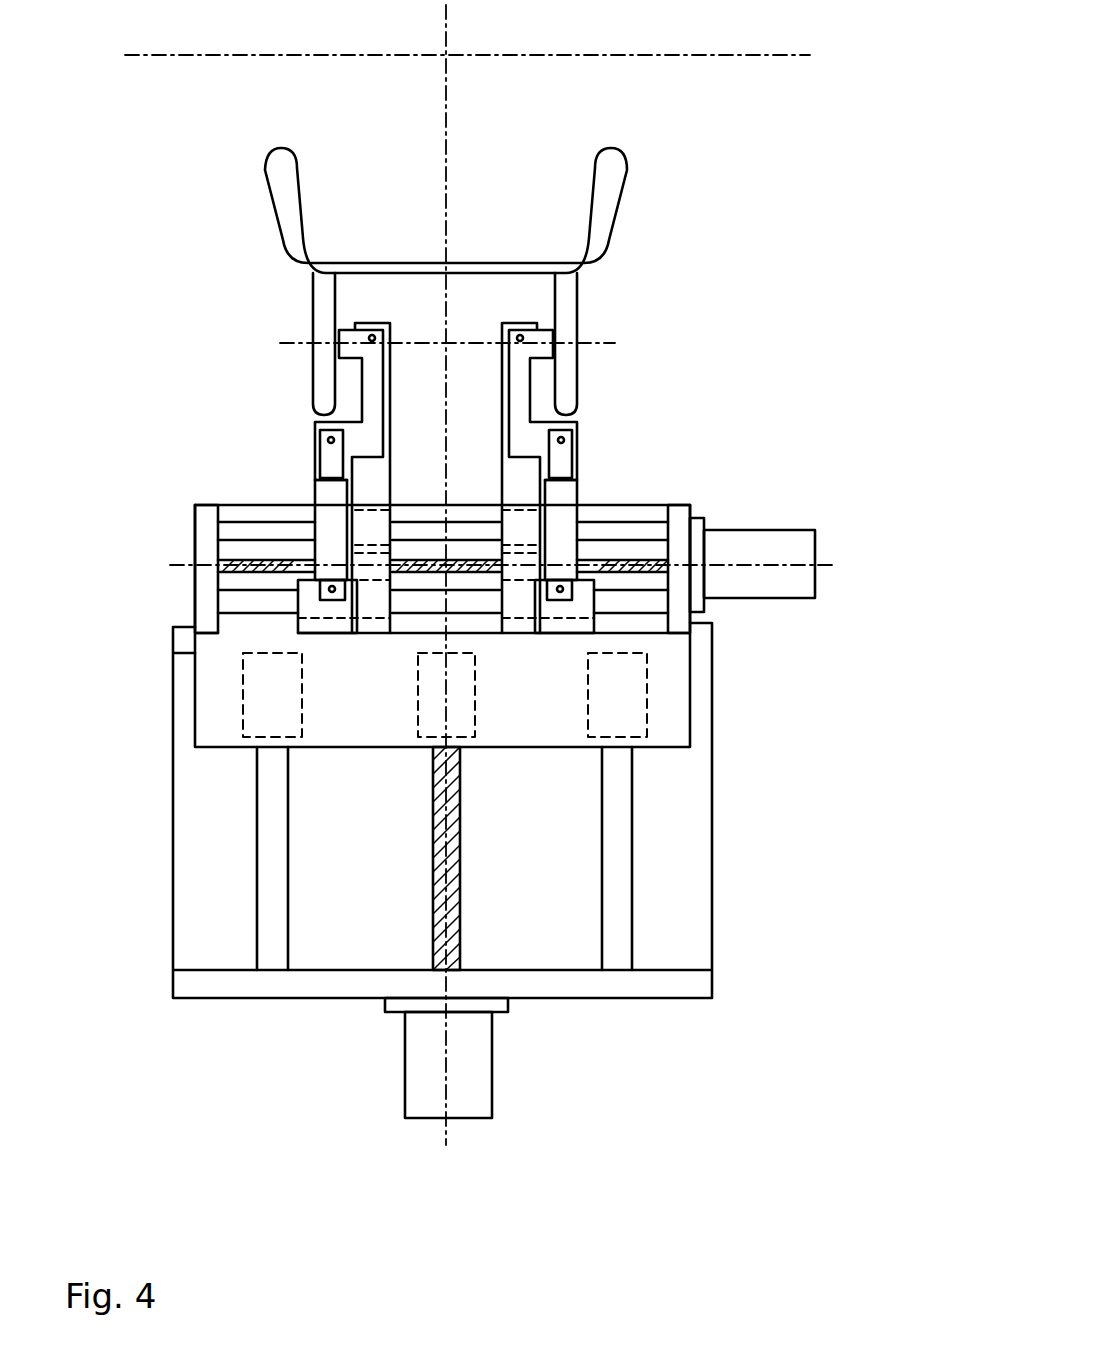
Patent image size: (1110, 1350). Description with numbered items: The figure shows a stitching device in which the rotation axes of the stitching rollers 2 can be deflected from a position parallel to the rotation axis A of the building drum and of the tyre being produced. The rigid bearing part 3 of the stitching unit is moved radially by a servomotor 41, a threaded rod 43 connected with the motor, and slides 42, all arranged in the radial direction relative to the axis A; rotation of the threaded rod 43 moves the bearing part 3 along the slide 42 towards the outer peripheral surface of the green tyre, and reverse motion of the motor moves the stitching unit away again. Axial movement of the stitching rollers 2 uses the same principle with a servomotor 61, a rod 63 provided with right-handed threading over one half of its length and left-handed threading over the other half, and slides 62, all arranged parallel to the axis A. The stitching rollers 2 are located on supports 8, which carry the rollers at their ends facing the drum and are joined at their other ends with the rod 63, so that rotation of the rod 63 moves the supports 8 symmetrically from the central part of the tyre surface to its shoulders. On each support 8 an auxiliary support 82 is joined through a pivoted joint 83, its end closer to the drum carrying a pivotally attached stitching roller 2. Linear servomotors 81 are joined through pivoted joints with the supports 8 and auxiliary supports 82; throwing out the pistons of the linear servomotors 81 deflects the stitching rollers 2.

The axis of the building drum A is at (467, 33).
The stitching roller 2 is at (327, 300).
The rigid bearing part 3 is at (218, 718).
The support 8 is at (378, 482).
The servomotor 41 is at (468, 1092).
The slide 42 is at (270, 910).
The threaded rod 43 is at (445, 920).
The servomotor 61 is at (757, 545).
The slide 62 is at (257, 600).
The rod 63 is at (613, 553).
The linear servomotor 81 is at (330, 522).
The auxiliary support 82 is at (373, 402).
The pivoted joint 83 is at (372, 336).